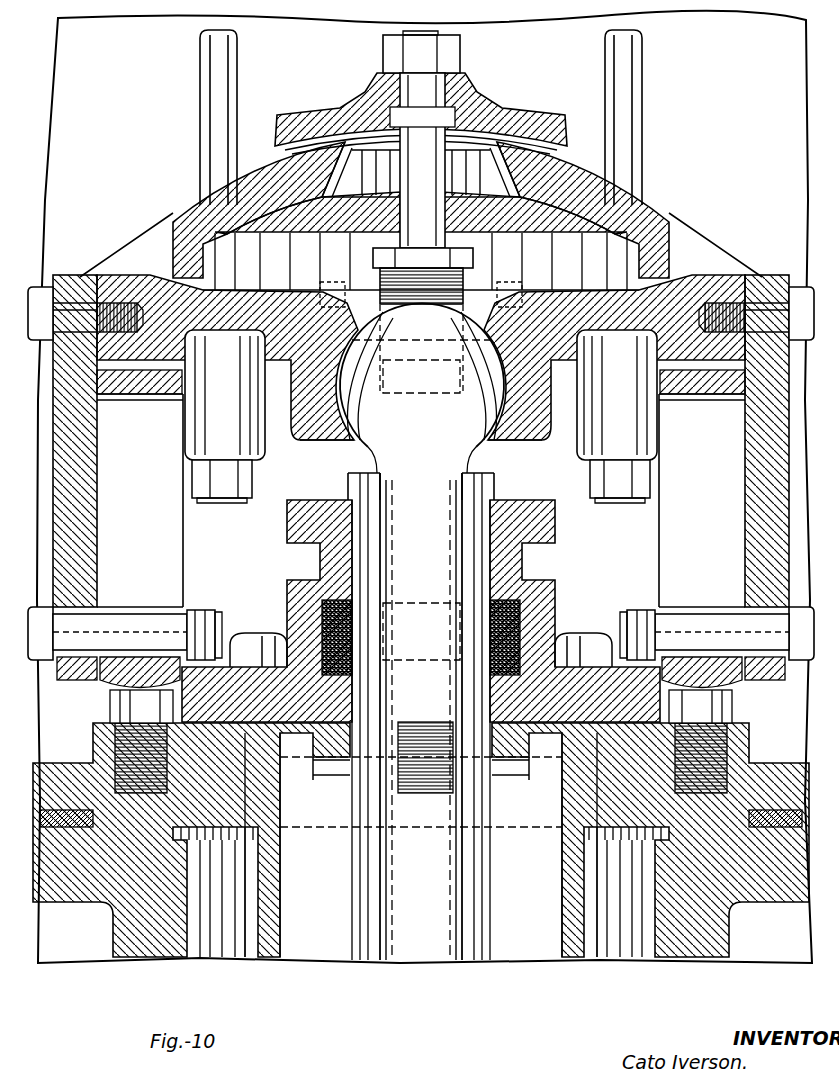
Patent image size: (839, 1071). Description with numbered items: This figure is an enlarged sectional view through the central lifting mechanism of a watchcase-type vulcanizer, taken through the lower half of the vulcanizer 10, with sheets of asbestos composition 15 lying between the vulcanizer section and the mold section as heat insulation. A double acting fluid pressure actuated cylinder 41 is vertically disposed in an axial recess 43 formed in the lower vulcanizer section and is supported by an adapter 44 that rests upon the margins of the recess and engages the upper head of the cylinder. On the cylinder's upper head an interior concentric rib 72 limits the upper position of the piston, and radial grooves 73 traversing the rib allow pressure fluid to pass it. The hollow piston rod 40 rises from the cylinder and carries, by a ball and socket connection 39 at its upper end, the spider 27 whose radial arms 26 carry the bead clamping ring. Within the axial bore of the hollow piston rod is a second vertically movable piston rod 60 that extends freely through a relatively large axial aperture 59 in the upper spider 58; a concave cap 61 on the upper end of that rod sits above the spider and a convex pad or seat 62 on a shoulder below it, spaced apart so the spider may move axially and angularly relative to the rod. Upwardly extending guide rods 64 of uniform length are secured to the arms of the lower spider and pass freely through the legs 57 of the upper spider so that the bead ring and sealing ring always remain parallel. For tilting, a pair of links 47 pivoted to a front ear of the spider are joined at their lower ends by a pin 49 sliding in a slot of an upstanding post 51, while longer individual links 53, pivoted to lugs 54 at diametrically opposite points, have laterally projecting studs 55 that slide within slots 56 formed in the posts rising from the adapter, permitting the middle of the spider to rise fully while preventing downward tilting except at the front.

The lower half of vulcanizer 10 is at (790, 892).
The sheets of asbestos composition 15 is at (50, 805).
The radial arms 26 is at (43, 477).
The spider 27 is at (285, 360).
The ball and socket connection 39 is at (473, 412).
The hollow piston rod 40 is at (492, 922).
The double acting fluid pressure actuated cylinder 41 is at (582, 905).
The axial recess 43 is at (673, 947).
The adapter 44 is at (235, 680).
The links 47 is at (358, 460).
The pin 49 is at (408, 562).
The upstanding post 51 is at (380, 677).
The individual links 53 is at (73, 668).
The lugs 54 is at (110, 277).
The laterally projecting studs 55 is at (130, 628).
The slots 56 is at (160, 525).
The posts 57 is at (147, 233).
The spider 58 is at (600, 197).
The axial aperture 59 is at (513, 157).
The piston rod 60 is at (423, 180).
The concave cap 61 is at (368, 103).
The convex pad or seat 62 is at (290, 223).
The guide rods 64 is at (210, 75).
The concentric rib 72 is at (530, 807).
The radial grooves 73 is at (327, 773).